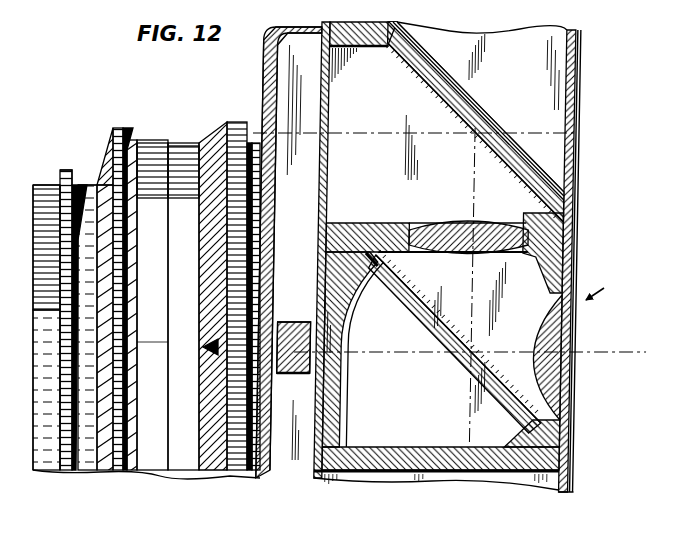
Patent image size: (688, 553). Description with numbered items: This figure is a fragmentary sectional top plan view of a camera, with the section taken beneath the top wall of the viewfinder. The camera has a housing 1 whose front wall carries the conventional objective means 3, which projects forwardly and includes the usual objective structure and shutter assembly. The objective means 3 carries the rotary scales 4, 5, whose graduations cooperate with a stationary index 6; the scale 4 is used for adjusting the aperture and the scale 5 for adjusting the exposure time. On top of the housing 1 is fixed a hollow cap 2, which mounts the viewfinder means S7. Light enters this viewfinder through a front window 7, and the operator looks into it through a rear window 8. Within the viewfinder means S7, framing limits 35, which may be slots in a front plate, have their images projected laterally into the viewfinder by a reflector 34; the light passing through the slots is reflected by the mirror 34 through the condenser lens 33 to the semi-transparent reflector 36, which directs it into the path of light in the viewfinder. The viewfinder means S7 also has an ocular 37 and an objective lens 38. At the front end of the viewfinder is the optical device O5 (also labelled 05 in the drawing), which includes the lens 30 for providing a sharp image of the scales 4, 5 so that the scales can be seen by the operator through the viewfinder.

The housing 1 is at (578, 191).
The hollow enclosure or cap 2 is at (576, 82).
The objective means 3 is at (99, 161).
The rotary scale 4 is at (157, 152).
The rotary scale 5 is at (190, 152).
The stationary index 6 is at (212, 343).
The front window 7 is at (316, 286).
The rear window 8 is at (567, 383).
The lens 30 is at (312, 339).
The condenser lens 33 is at (500, 226).
The reflector 34 is at (500, 158).
The framing limits 35 is at (331, 57).
The semi-transparent reflector 36 is at (416, 290).
The ocular 37 is at (556, 331).
The objective lens 38 is at (336, 446).
The viewfinder means S7 is at (605, 282).
The optical device O5 is at (303, 380).
The window 05 is at (294, 347).